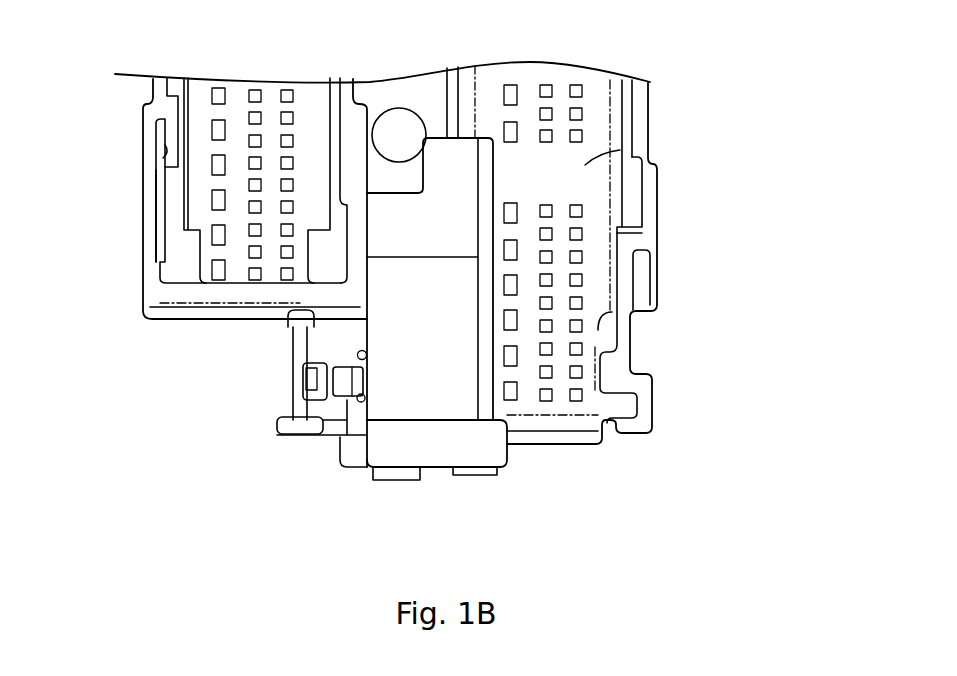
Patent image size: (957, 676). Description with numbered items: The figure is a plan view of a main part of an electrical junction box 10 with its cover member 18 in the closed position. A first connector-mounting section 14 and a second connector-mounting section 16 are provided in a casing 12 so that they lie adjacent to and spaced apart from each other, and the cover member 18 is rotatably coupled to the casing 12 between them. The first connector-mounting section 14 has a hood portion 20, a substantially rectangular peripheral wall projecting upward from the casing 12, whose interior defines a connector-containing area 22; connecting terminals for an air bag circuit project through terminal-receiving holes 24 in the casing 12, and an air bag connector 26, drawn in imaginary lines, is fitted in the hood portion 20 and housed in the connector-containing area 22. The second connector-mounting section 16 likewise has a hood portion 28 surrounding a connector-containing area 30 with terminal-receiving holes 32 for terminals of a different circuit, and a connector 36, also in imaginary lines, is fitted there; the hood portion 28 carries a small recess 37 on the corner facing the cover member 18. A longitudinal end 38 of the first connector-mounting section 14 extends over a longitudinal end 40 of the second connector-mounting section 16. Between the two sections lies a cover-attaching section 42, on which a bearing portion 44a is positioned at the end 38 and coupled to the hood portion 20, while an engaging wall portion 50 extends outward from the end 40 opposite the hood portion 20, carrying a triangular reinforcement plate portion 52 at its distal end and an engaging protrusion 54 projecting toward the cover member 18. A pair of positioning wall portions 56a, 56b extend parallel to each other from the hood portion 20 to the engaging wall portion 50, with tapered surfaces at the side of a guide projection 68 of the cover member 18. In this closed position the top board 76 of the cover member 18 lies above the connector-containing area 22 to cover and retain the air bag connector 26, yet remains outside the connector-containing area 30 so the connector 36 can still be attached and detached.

The electrical junction box 10 is at (675, 32).
The casing 12 is at (418, 88).
The first connector-mounting section 14 is at (665, 101).
The second connector-mounting section 16 is at (128, 97).
The cover member 18 is at (441, 478).
The hood portion 20 is at (648, 203).
The connector-containing area 22 is at (615, 318).
The terminal-receiving holes 24 is at (518, 127).
The connector 26 is at (620, 150).
The hood portion 28 is at (158, 178).
The connector-containing area 30 is at (165, 152).
The terminal-receiving holes 32 is at (220, 127).
The connector 36 is at (195, 138).
The recess 37 is at (300, 325).
The longitudinal end 38 is at (600, 446).
The longitudinal end 40 is at (178, 318).
The cover-attaching section 42 is at (313, 450).
The bearing portion 44a is at (360, 455).
The engaging wall portion 50 is at (296, 356).
The reinforcement plate portion 52 is at (283, 428).
The engaging protrusion 54 is at (310, 378).
The positioning wall portion 56a is at (358, 403).
The positioning wall portion 56b is at (364, 358).
The guide projection 68 is at (340, 384).
The top board 76 is at (445, 380).